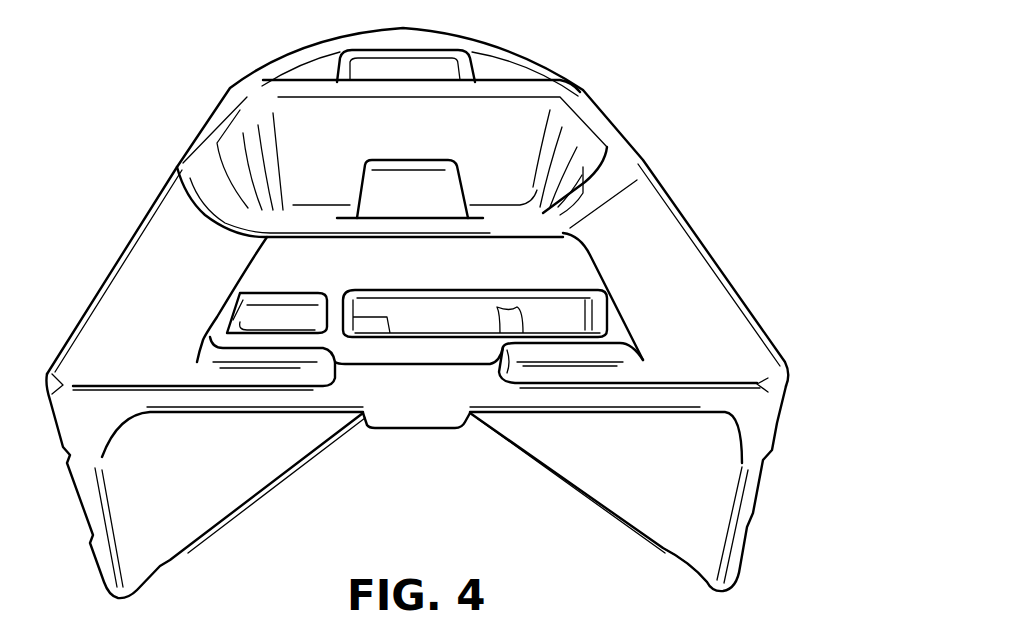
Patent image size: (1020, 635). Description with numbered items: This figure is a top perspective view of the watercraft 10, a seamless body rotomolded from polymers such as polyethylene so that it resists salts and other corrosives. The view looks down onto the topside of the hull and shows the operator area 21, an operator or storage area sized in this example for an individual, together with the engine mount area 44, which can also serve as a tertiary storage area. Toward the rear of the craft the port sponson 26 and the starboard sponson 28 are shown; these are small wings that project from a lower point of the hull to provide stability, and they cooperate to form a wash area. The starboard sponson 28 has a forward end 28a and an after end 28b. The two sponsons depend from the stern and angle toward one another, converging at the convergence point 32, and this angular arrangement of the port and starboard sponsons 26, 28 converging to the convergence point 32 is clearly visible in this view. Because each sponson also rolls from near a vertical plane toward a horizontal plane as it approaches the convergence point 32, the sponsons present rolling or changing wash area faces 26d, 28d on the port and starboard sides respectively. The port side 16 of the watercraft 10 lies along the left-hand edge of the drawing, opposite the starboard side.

The watercraft 10 is at (653, 132).
The operator area 21 is at (350, 146).
The engine mount area 44 is at (428, 320).
The convergence point 32 is at (420, 417).
The port sponson 26 is at (205, 496).
The wash area face 26d is at (232, 476).
The starboard sponson 28 is at (596, 459).
The forward end 28a is at (520, 426).
The after end 28b is at (700, 538).
The wash area face 28d is at (682, 481).
The port side 16 is at (736, 630).